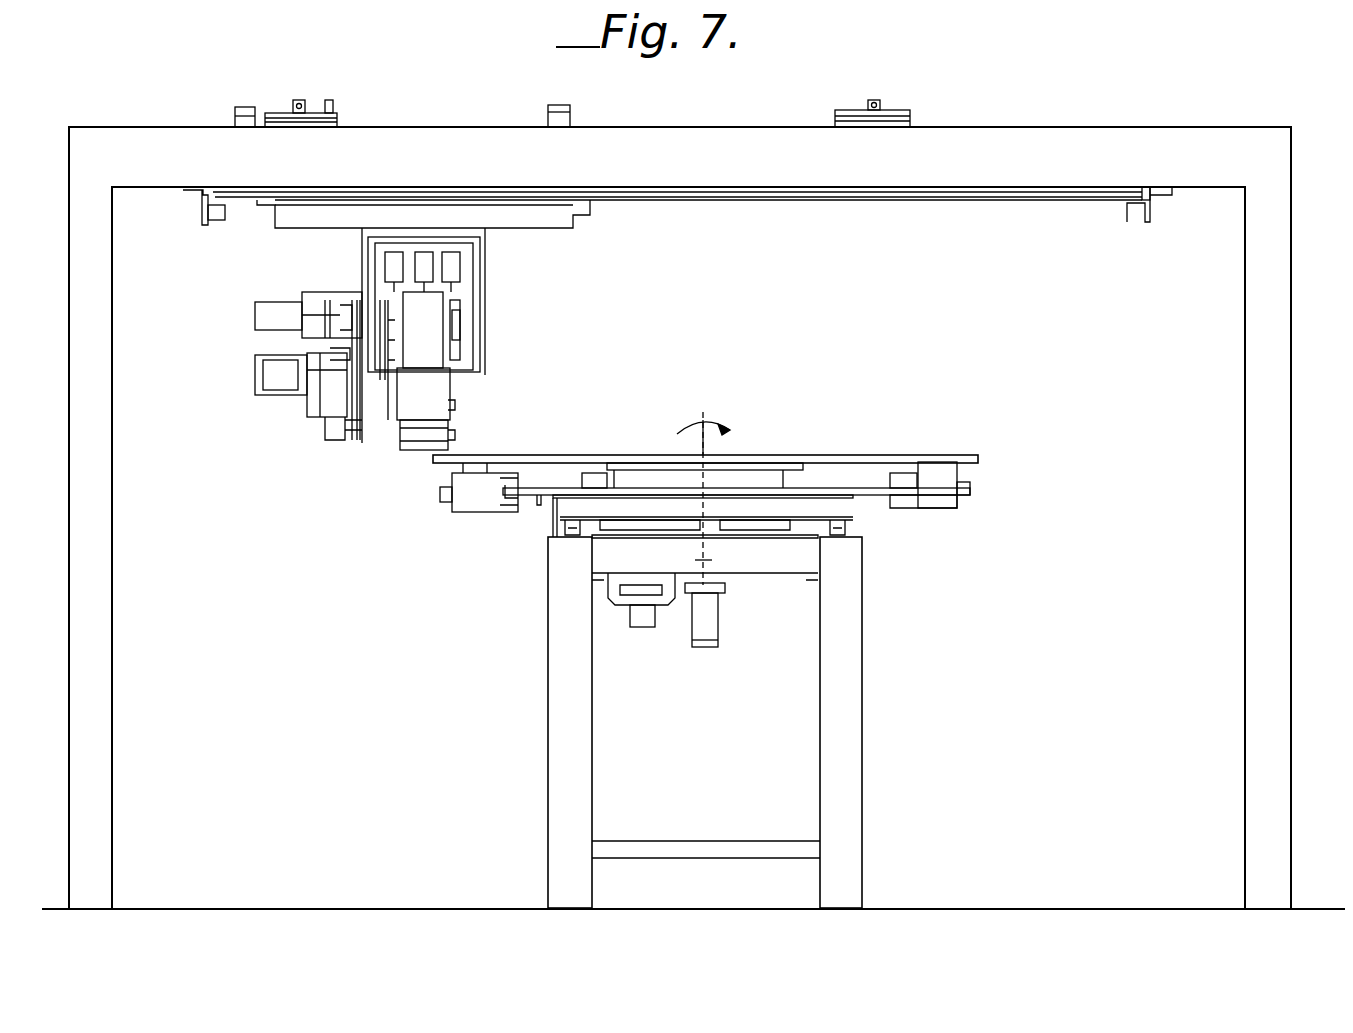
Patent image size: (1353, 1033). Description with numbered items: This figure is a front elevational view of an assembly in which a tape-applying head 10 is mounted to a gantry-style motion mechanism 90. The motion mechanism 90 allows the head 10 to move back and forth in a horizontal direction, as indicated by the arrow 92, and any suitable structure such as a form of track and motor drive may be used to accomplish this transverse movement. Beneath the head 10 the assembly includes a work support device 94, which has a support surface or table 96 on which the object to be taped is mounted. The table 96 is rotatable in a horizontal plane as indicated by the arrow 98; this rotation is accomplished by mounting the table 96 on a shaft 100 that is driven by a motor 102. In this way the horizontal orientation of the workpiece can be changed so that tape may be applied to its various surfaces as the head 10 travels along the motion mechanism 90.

The gantry-style motion mechanism 90 is at (1056, 126).
The arrow 92 is at (522, 277).
The head 10 is at (472, 405).
The work support device 94 is at (864, 612).
The table 96 is at (936, 455).
The arrow 98 is at (718, 418).
The shaft 100 is at (712, 560).
The motor 102 is at (707, 628).